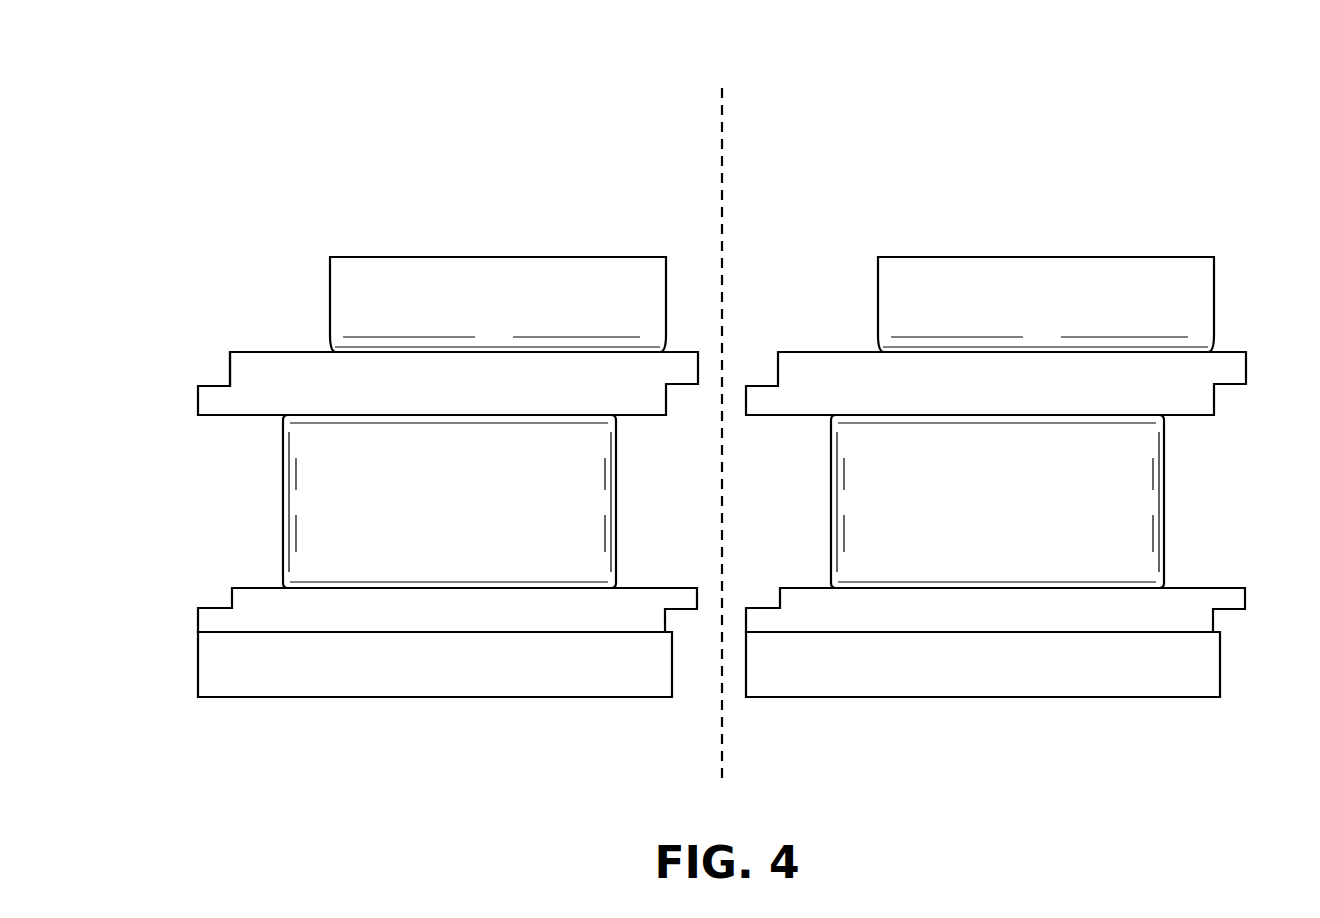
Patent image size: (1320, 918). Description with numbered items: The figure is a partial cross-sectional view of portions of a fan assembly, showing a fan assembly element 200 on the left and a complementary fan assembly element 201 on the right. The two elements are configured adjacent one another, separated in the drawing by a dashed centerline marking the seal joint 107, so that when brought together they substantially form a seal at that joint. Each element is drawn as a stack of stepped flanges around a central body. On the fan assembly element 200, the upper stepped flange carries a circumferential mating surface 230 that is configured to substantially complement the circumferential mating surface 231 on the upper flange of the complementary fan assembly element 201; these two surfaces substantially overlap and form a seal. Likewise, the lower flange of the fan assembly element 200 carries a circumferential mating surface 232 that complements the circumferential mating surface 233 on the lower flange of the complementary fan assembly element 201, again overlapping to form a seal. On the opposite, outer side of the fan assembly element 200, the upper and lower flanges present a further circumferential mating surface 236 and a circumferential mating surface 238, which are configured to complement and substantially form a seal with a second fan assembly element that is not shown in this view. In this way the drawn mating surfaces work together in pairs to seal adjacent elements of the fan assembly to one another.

The fan assembly element 200 is at (500, 135).
The complementary fan assembly element 201 is at (1047, 135).
The seal joint 107 is at (724, 420).
The circumferential mating surface 230 is at (678, 384).
The circumferential mating surface 236 is at (213, 386).
The circumferential mating surface 238 is at (216, 607).
The circumferential mating surface 232 is at (683, 613).
The circumferential mating surface 231 is at (762, 383).
The circumferential mating surface 233 is at (762, 607).